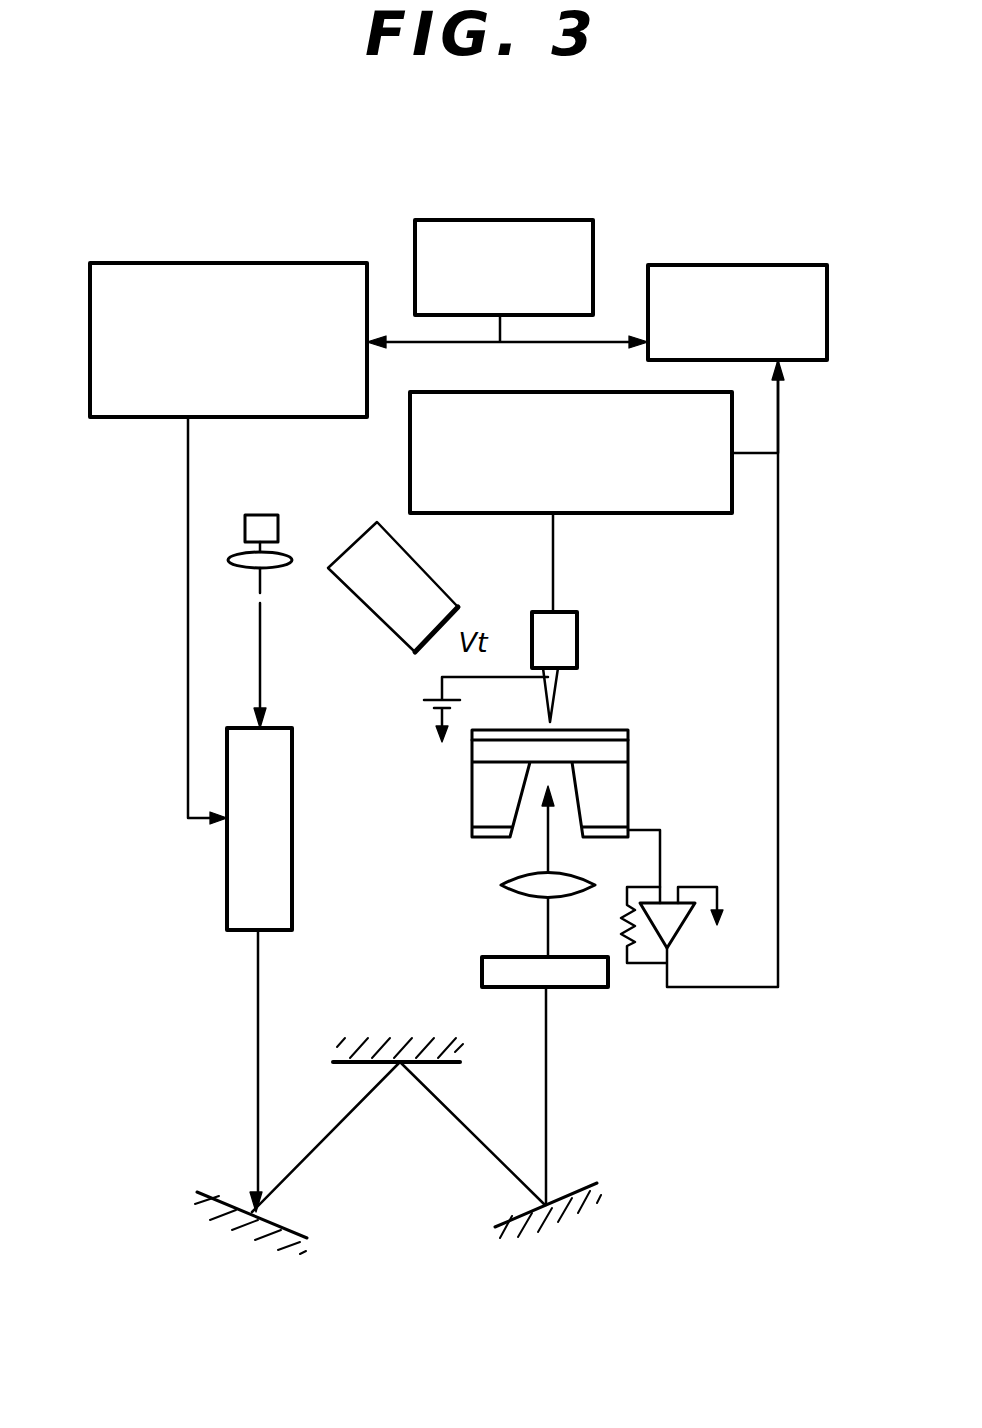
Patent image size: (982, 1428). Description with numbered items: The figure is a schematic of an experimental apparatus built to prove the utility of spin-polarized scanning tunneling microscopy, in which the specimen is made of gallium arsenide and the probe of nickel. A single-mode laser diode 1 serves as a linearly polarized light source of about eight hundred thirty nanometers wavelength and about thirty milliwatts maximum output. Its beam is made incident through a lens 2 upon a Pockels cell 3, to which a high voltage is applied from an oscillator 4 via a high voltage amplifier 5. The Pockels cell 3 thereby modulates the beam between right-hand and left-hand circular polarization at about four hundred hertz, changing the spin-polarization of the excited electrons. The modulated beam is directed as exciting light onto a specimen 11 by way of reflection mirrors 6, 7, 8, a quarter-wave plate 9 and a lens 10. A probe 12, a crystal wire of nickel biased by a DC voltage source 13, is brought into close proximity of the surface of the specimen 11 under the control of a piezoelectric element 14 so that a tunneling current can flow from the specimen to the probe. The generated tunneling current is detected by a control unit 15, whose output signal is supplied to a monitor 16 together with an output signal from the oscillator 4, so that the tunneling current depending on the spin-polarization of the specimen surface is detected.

The single-mode laser diode 1 is at (278, 515).
The lens 2 is at (288, 567).
The Pockels cell 3 is at (292, 800).
The oscillator 4 is at (507, 220).
The high voltage amplifier 5 is at (225, 263).
The reflection mirror 6 is at (225, 1198).
The reflection mirror 7 is at (342, 1063).
The reflection mirror 8 is at (574, 1196).
The λ/4 plate 9 is at (482, 967).
The lens 10 is at (502, 891).
The specimen 11 is at (640, 752).
The probe 12 is at (556, 698).
The DC voltage source 13 is at (423, 704).
The piezoelectric element 14 is at (577, 632).
The control unit 15 is at (670, 513).
The monitor 16 is at (739, 265).